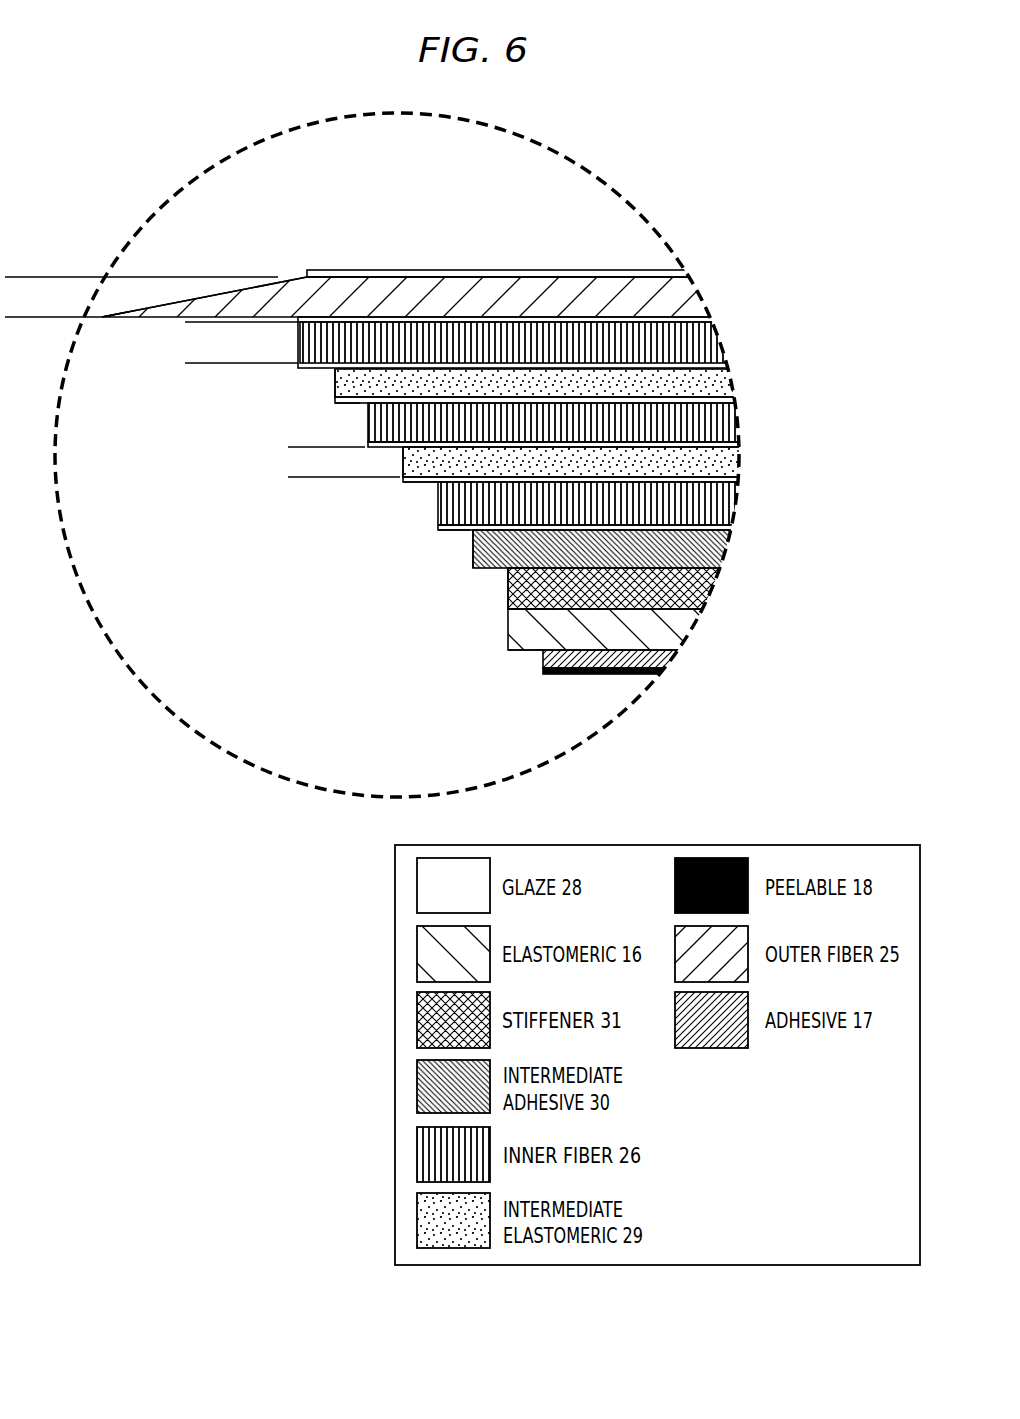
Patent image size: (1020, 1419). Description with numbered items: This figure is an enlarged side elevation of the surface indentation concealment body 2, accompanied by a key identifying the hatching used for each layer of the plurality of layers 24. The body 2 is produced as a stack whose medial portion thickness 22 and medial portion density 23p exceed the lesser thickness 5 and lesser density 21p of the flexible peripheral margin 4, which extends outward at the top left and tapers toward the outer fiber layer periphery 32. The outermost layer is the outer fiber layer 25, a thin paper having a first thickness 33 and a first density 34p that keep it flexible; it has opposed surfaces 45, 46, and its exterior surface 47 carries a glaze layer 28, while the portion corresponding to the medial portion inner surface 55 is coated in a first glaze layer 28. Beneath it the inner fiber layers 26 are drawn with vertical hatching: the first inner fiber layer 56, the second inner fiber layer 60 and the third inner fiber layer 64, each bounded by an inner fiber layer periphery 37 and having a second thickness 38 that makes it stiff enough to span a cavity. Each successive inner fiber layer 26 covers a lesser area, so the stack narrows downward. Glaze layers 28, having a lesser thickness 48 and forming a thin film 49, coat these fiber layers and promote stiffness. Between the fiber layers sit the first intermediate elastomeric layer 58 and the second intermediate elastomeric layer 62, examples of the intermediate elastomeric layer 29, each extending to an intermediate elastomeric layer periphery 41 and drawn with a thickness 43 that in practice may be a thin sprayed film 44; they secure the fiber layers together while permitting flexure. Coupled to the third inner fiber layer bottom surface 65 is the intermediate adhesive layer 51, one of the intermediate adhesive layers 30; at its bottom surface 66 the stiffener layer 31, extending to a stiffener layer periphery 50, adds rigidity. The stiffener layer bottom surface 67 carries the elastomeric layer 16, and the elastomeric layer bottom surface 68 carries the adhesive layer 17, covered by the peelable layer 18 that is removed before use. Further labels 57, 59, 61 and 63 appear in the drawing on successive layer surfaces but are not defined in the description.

The body 2 is at (447, 268).
The flexible peripheral margin 4 is at (204, 266).
The lesser density 21p is at (303, 245).
The lesser thickness 5 is at (20, 248).
The elastomeric layer 16 is at (683, 628).
The adhesive layer 17 is at (668, 662).
The peelable layer 18 is at (668, 674).
The medial portion thickness 22 is at (468, 462).
The medial portion density 23p is at (468, 462).
The plurality of layers 24 is at (725, 675).
The outer fiber layer 25 is at (450, 280).
The inner fiber layers 26 is at (513, 414).
The glaze layer 28 is at (695, 275).
The intermediate elastomeric layer 29 is at (554, 420).
The intermediate adhesive layers 30 is at (720, 553).
The stiffener layer 31 is at (707, 587).
The outer fiber layer periphery 32 is at (102, 315).
The first thickness 33 is at (450, 280).
The first density 34p is at (685, 300).
The inner fiber layer periphery 37 is at (300, 340).
The second thickness 38 is at (198, 322).
The intermediate elastomeric layer periphery 41 is at (403, 460).
The thickness 43 is at (297, 447).
The thin film 44 is at (335, 382).
The opposed surface 45 is at (498, 249).
The exterior surface 47 is at (515, 273).
The opposed surface 46 is at (505, 279).
The medial portion inner surface 55 is at (602, 317).
The lesser thickness 48 is at (397, 273).
The thin film 49 is at (453, 528).
The stiffener layer periphery 50 is at (508, 582).
The intermediate adhesive layer 51 is at (472, 543).
The first inner fiber layer 56 is at (707, 340).
The inner fiber layer surface 57 is at (720, 343).
The first intermediate elastomeric layer 58 is at (730, 385).
The glaze layer edge 59 is at (350, 398).
The second inner fiber layer 60 is at (727, 420).
The inner fiber layer edge 61 is at (390, 440).
The second intermediate elastomeric layer 62 is at (735, 465).
The glaze layer edge 63 is at (430, 481).
The third inner fiber layer 64 is at (727, 505).
The third inner fiber layer bottom surface 65 is at (467, 518).
The bottom surface of the intermediate adhesive layer 66 is at (483, 572).
The stiffener layer bottom surface 67 is at (518, 612).
The elastomeric layer bottom surface 68 is at (522, 650).